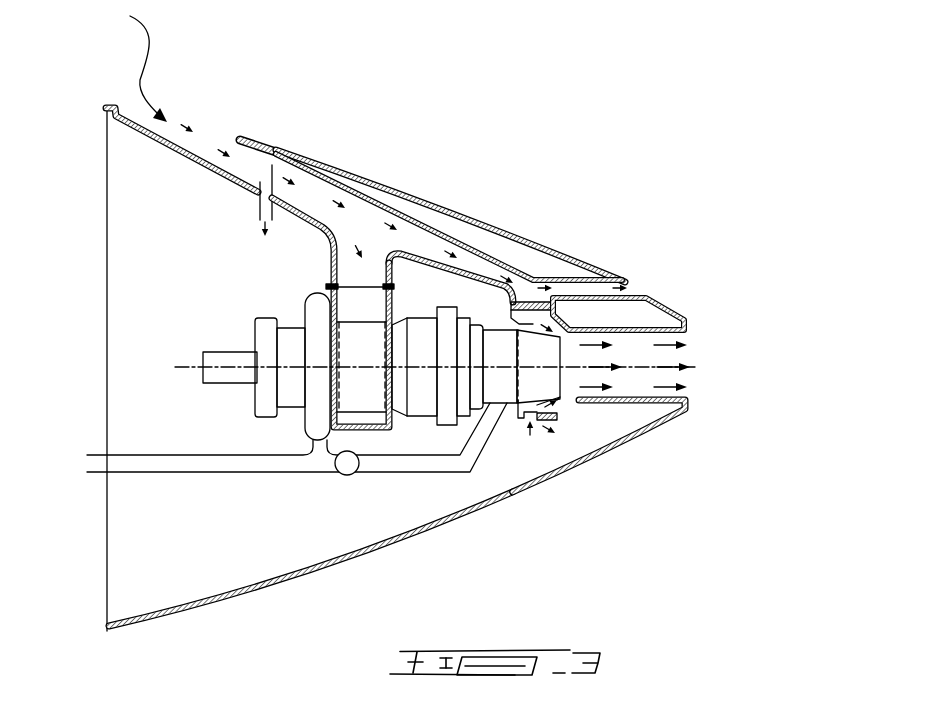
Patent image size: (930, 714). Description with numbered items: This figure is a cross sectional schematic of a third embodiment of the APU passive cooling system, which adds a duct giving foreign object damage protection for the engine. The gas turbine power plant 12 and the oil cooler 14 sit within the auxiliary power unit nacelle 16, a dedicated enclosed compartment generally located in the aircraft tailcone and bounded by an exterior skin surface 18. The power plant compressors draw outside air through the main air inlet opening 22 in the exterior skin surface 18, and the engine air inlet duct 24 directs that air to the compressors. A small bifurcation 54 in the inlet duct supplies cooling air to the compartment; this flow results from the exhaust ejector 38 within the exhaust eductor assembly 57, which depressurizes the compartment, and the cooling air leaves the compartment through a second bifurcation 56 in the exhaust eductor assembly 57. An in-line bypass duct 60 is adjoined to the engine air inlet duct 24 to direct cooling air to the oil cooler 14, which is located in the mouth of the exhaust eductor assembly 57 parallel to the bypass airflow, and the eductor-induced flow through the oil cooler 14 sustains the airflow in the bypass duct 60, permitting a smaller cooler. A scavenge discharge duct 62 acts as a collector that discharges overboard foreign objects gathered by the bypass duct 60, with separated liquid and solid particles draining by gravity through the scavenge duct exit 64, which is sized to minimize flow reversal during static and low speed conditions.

The gas turbine power plant 12 is at (447, 425).
The oil cooler 14 is at (528, 302).
The auxiliary power unit nacelle 16 is at (141, 223).
The exterior skin surface 18 is at (233, 598).
The main air inlet opening 22 is at (134, 61).
The engine air inlet duct 24 is at (254, 137).
The exhaust ejector 38 is at (578, 401).
The bifurcation 54 is at (278, 147).
The second bifurcation 56 is at (530, 434).
The exhaust eductor assembly 57 is at (544, 422).
The in-line bypass duct 60 is at (465, 248).
The scavenge discharge duct 62 is at (603, 283).
The scavenge duct exit 64 is at (648, 274).